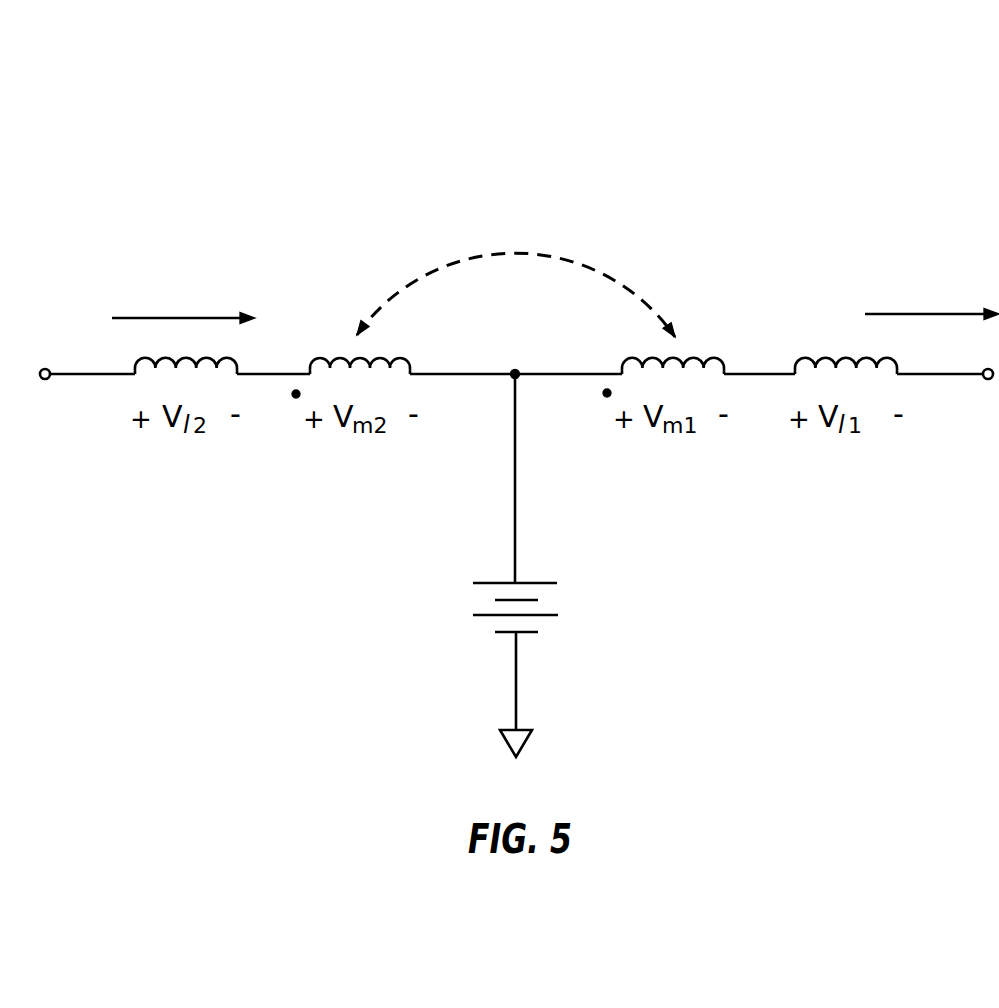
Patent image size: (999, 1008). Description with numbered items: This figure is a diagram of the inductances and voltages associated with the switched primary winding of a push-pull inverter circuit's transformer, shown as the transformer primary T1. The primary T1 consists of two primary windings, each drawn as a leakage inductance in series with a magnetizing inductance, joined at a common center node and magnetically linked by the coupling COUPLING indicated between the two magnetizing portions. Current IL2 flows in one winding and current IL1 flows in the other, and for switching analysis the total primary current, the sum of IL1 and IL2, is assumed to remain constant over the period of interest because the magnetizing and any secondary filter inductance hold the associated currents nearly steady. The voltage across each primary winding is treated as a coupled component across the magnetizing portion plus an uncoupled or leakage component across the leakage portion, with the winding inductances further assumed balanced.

The transformer primary T1 is at (516, 229).
The coupling COUPLING is at (516, 272).
The primary current IL2 is at (183, 295).
The primary current IL1 is at (932, 291).